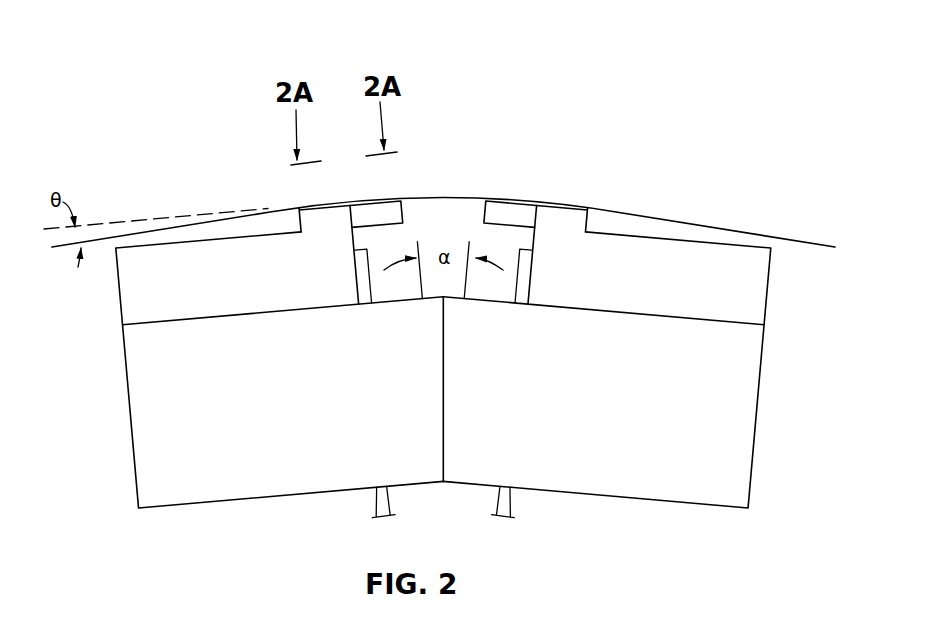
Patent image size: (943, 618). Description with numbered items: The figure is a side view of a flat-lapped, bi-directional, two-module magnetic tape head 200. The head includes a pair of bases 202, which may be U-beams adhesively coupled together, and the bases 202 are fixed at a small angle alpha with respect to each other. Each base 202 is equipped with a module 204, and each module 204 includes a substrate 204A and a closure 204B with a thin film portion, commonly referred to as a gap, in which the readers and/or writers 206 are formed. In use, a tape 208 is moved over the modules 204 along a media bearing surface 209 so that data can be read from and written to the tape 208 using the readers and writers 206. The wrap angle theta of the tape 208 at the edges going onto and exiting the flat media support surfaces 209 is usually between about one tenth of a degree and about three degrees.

The flat-lapped, bi-directional, two-module magnetic tape head 200 is at (172, 166).
The base 202 is at (126, 392).
The module 204 is at (448, 249).
The substrate 204A is at (179, 269).
The closure 204B is at (486, 212).
The readers and/or writers 206 is at (353, 200).
The tape 208 is at (681, 221).
The media (tape) bearing surface 209 is at (307, 202).